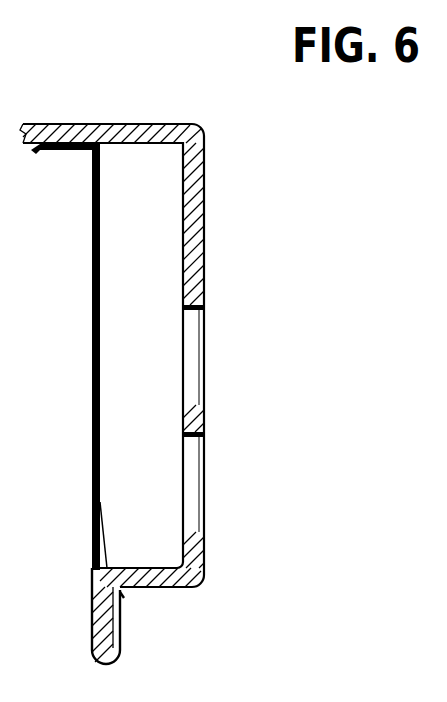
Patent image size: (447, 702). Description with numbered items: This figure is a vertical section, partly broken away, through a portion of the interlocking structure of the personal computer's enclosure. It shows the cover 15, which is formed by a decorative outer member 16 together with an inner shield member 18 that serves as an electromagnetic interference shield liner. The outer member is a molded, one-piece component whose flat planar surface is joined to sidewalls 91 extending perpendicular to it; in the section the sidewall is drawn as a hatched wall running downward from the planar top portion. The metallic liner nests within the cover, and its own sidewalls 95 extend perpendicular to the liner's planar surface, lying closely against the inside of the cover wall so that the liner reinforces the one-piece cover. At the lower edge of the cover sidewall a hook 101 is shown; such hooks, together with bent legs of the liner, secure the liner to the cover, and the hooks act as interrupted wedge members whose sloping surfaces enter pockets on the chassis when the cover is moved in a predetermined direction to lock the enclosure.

The cover 15 is at (162, 92).
The decorative outer member 16 is at (67, 124).
The inner shield member 18 is at (92, 228).
The sidewalls 91 is at (205, 212).
The sidewalls 95 is at (92, 380).
The hooks 101 is at (122, 637).